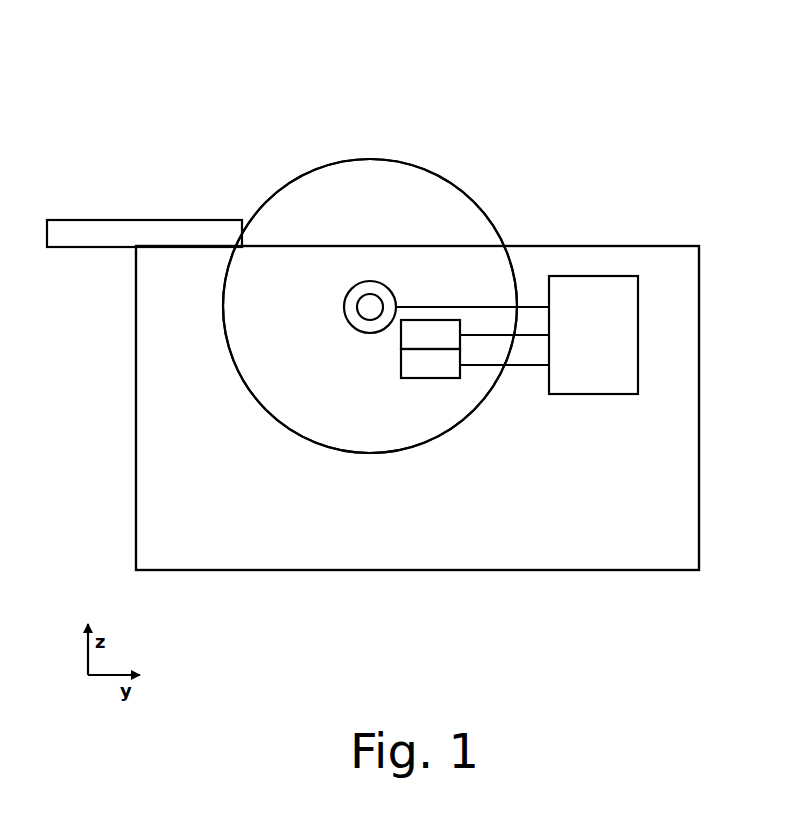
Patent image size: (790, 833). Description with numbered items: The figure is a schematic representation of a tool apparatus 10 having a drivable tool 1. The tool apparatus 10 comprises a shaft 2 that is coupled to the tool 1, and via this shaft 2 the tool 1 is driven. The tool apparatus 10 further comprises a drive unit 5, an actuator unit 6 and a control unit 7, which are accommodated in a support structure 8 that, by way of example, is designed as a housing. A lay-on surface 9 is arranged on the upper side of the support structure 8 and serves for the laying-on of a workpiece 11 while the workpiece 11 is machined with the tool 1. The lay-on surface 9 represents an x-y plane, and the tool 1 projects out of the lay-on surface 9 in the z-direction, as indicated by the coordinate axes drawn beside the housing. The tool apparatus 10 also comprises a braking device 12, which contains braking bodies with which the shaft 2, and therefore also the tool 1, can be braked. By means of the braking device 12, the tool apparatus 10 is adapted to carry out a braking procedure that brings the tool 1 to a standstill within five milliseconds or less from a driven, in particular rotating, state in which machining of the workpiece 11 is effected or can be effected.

The tool 1 is at (448, 195).
The shaft 2 is at (362, 313).
The drive unit 5 is at (475, 334).
The actuator unit 6 is at (475, 363).
The control unit 7 is at (593, 335).
The support structure 8 is at (660, 256).
The lay-on surface 9 is at (277, 242).
The tool apparatus 10 is at (112, 88).
The workpiece 11 is at (104, 227).
The braking device 12 is at (389, 297).